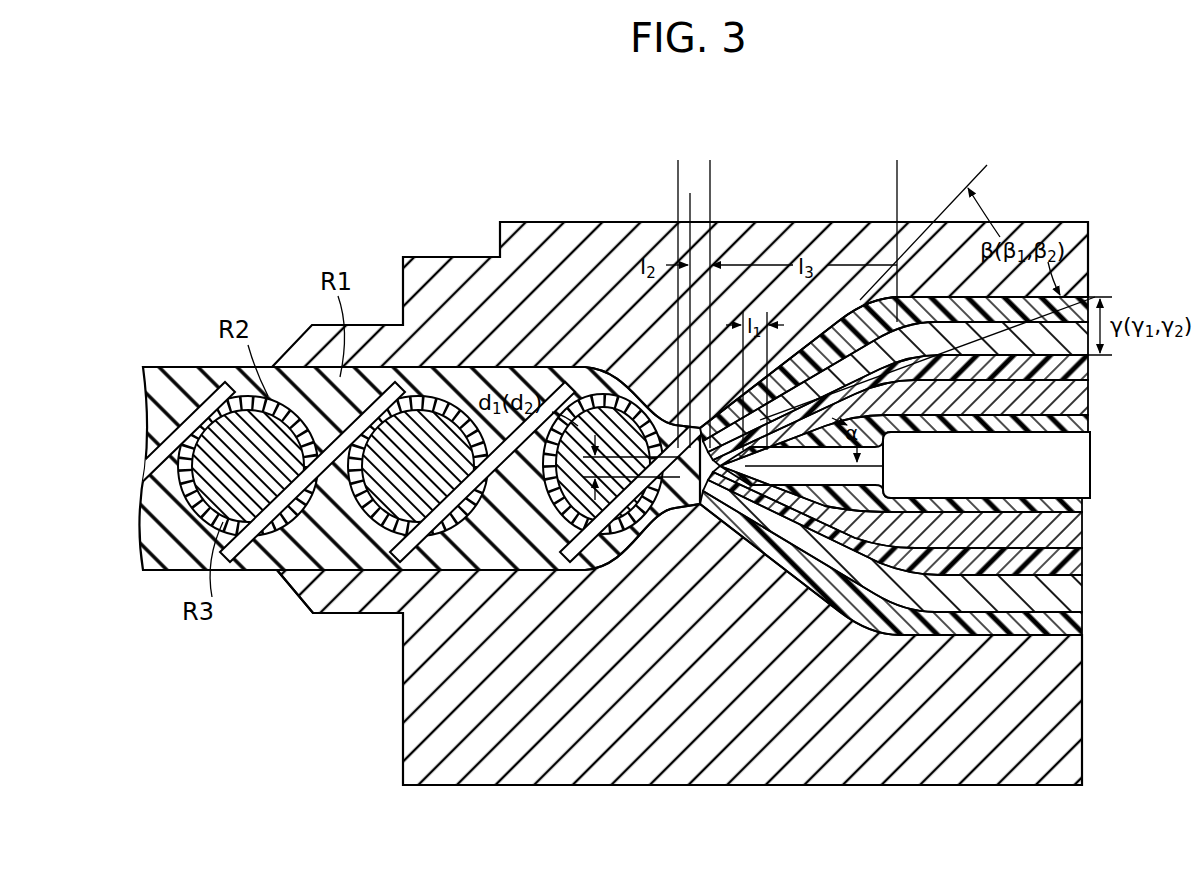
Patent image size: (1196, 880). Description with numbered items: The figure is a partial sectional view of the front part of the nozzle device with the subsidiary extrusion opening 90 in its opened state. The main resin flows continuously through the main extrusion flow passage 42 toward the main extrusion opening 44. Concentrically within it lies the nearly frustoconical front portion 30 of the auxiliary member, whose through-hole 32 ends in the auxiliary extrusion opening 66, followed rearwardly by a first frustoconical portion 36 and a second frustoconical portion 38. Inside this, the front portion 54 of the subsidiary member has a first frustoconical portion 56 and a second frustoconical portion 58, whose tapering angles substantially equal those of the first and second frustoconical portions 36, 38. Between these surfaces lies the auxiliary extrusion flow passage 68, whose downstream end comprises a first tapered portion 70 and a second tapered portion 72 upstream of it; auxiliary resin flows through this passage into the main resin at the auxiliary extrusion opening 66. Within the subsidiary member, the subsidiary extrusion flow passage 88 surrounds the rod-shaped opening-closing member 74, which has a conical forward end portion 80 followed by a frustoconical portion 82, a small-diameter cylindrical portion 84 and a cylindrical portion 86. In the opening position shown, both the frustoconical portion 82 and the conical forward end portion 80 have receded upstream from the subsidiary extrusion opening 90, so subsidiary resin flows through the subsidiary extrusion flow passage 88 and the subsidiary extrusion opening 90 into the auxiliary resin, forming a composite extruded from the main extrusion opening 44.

The front portion 30 is at (787, 562).
The through-hole 32 is at (945, 577).
The first frustoconical portion 36 is at (735, 170).
The second frustoconical portion 38 is at (895, 170).
The main extrusion flow passage 42 is at (1014, 622).
The main extrusion opening 44 is at (273, 578).
The front portion 54 is at (846, 572).
The first frustoconical portion 56 is at (663, 202).
The second frustoconical portion 58 is at (897, 170).
The auxiliary extrusion opening 66 is at (643, 568).
The auxiliary extrusion flow passage 68 is at (1031, 562).
The first tapered portion 70 is at (700, 507).
The second tapered portion 72 is at (760, 500).
The opening-closing member 74 is at (978, 474).
The forward end portion 80 is at (747, 513).
The frustoconical portion 82 is at (848, 562).
The small-diameter cylindrical portion 84 is at (865, 482).
The cylindrical portion 86 is at (997, 489).
The subsidiary extrusion flow passage 88 is at (1082, 434).
The subsidiary extrusion opening 90 is at (668, 515).